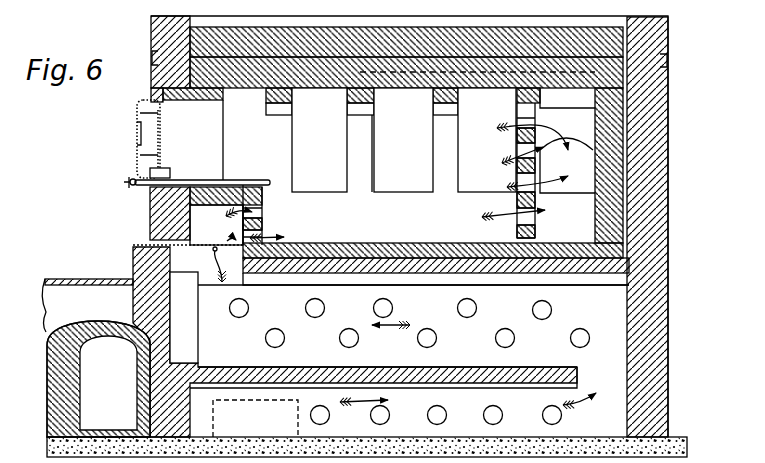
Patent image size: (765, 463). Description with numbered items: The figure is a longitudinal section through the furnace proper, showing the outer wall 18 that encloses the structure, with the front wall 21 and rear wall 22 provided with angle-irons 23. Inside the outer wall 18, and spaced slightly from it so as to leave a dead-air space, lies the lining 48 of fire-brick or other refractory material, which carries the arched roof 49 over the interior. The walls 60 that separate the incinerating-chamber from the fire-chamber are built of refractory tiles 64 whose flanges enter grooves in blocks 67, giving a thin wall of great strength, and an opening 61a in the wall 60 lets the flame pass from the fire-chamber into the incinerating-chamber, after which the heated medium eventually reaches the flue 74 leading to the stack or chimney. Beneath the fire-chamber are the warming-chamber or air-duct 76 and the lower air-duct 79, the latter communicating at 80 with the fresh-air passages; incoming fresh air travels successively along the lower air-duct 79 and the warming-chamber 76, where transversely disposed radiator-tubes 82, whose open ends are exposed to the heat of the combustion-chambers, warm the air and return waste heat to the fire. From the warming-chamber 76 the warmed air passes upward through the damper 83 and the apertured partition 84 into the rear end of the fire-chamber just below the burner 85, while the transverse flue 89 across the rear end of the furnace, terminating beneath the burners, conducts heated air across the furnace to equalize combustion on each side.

The outer wall 18 is at (150, 37).
The front wall 21 is at (669, 352).
The rear wall 22 is at (150, 215).
The angle-irons 23 is at (152, 58).
The lining 48 is at (262, 198).
The arched roof 49 is at (481, 27).
The walls 60 is at (433, 219).
The opening 61a is at (538, 152).
The tiles 64 is at (476, 152).
The blocks 67 is at (363, 140).
The flue 74 is at (96, 358).
The warming-chamber or air-duct 76 is at (413, 326).
The lower air-duct 79 is at (454, 413).
The communication 80 is at (255, 418).
The radiator-tubes 82 is at (477, 306).
The damper 83 is at (216, 243).
The apertured partition 84 is at (262, 210).
The burner 85 is at (268, 164).
The transverse flue 89 is at (184, 317).